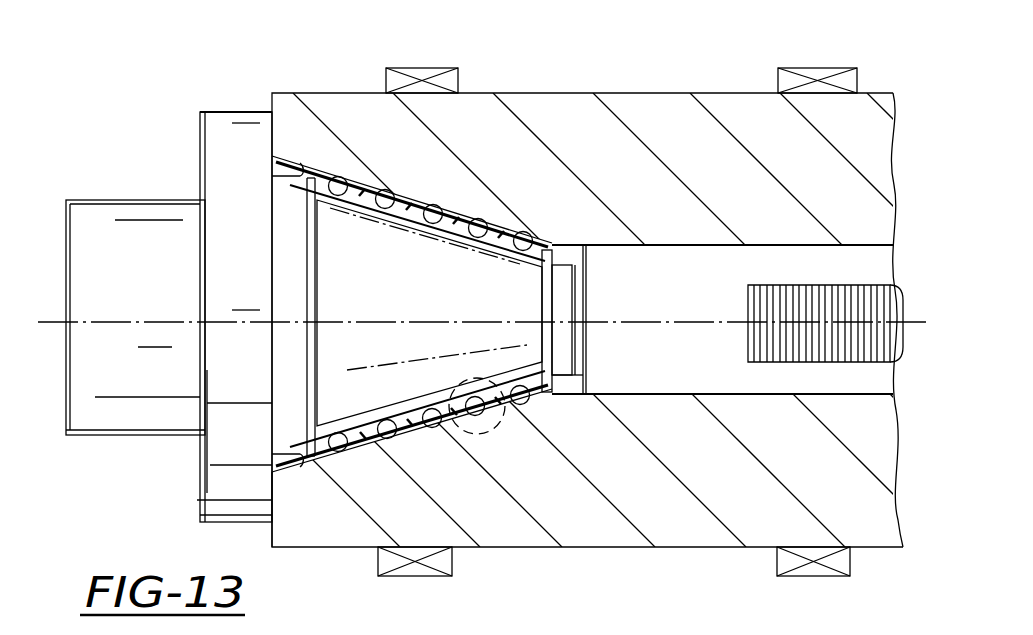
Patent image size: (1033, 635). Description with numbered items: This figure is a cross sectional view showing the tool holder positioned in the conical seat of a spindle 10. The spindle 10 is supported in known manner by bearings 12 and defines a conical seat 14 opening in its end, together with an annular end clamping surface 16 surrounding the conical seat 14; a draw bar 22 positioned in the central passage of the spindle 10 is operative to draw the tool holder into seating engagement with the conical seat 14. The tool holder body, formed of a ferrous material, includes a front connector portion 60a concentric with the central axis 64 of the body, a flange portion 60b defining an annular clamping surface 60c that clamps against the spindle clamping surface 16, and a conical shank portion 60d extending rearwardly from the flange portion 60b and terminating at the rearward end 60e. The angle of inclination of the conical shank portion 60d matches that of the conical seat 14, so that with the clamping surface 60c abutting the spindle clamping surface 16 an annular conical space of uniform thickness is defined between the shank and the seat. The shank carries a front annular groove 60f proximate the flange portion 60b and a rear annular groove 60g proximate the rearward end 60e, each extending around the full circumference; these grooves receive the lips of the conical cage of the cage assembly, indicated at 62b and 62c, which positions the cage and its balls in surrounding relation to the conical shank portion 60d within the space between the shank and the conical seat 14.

The spindle 10 is at (634, 72).
The bearings 12 is at (458, 76).
The conical seat 14 is at (580, 402).
The annular end clamping surface 16 is at (268, 100).
The draw bar 22 is at (790, 285).
The front connector portion 60a is at (106, 200).
The flange portion 60b is at (200, 125).
The annular clamping surface 60c is at (276, 498).
The conical shank portion 60d is at (418, 361).
The rearward end 60e is at (586, 296).
The front annular groove 60f is at (310, 252).
The rear annular groove 60g is at (584, 338).
The ball cage 62b is at (560, 247).
The cage ring 62c is at (305, 172).
The central axis 64 is at (153, 322).